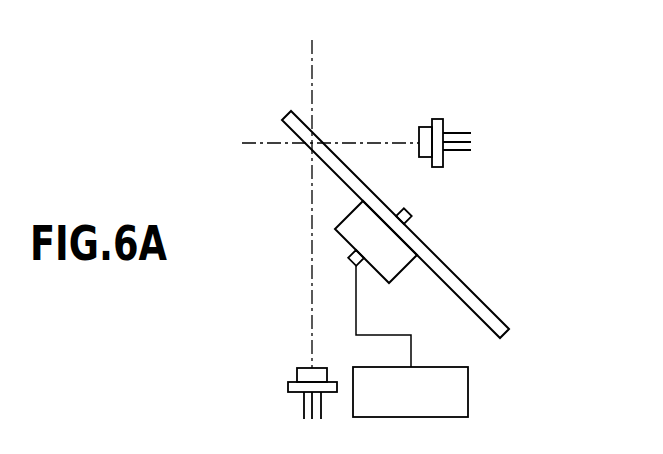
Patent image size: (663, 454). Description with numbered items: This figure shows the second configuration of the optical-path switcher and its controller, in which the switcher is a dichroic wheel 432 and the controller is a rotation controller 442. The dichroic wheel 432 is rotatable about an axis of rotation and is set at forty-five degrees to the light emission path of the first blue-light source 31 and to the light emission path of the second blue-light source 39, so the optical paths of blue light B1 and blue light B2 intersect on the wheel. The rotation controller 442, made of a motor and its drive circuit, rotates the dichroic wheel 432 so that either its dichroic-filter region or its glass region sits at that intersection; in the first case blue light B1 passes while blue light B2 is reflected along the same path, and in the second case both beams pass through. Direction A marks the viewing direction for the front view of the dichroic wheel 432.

The first blue-light source 31 is at (435, 119).
The second blue-light source 39 is at (297, 375).
The dichroic wheel 432 is at (481, 297).
The rotation controller 442 is at (468, 390).
The direction A is at (421, 202).
The blue light B1 is at (396, 138).
The blue light B2 is at (314, 61).